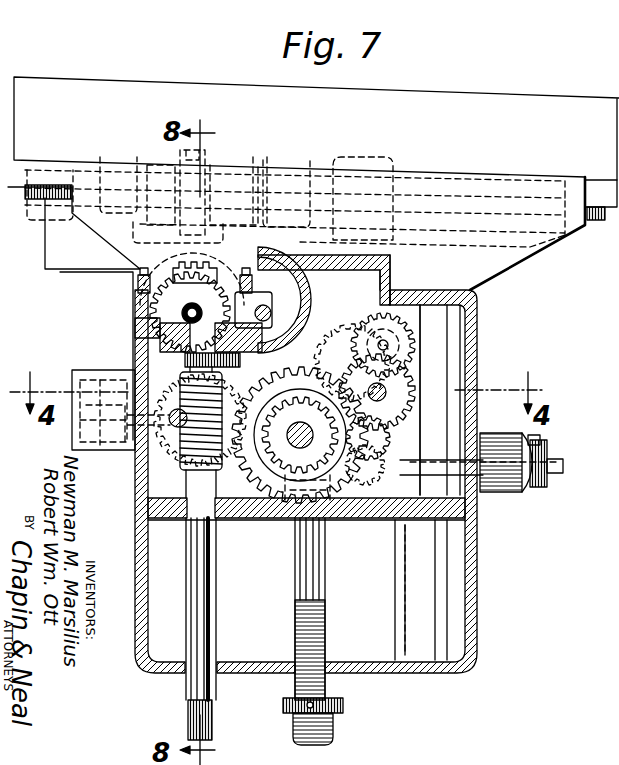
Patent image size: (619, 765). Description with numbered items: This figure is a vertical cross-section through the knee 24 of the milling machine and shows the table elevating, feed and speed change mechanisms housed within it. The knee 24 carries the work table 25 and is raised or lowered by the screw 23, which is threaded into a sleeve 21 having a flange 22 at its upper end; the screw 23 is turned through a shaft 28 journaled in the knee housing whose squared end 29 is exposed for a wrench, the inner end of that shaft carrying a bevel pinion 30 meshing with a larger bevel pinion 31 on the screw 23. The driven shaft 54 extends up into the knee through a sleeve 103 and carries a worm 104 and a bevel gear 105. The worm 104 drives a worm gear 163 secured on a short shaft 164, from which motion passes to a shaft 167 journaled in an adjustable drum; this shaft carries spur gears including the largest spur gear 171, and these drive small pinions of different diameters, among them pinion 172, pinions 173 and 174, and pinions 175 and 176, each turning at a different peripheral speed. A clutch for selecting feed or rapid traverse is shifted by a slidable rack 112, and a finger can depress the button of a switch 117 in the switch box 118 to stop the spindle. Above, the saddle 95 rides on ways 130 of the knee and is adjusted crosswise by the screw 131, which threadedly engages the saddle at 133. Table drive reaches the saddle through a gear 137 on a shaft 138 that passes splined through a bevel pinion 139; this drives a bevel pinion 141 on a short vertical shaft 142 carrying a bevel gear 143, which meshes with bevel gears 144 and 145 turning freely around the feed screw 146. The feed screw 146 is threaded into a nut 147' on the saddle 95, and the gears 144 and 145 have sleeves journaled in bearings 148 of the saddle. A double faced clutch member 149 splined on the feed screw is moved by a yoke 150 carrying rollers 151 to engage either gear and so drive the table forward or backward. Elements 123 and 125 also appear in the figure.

The work table 25 is at (470, 99).
The bearings 148 is at (100, 178).
The bevel gear 144 is at (147, 163).
The bevel gear 145 is at (260, 158).
The double faced clutch member 149 is at (214, 164).
The rollers 151 is at (210, 160).
The yoke 150 is at (188, 158).
The nut 147' is at (366, 180).
The feed screw 146 is at (30, 200).
The ways 130 is at (392, 270).
The saddle 95 is at (505, 270).
The knee 24 is at (362, 519).
The adjustable screw 131 is at (306, 294).
The threaded engagement 133 is at (299, 312).
The gear 137 is at (290, 300).
The shaft 138 is at (165, 337).
The bevel pinion 139 is at (182, 316).
The bevel gear 143 is at (173, 262).
The short vertical shaft 142 is at (138, 282).
The bevel pinion 141 is at (138, 303).
The worm 104 is at (182, 452).
The switch box 118 is at (103, 392).
The slidable rack 112 is at (170, 418).
The switch 117 is at (99, 432).
The short shaft 164 is at (290, 448).
The bevel gear 105 is at (308, 385).
The worm gear 163 is at (348, 352).
The pinion 172 is at (366, 332).
The pinion 173 is at (383, 342).
The pinion 174 is at (418, 383).
The spur gear 171 is at (422, 360).
The pinion 175 is at (426, 432).
The shaft 167 is at (376, 400).
The pinion 176 is at (372, 470).
The bevel pinion 30 is at (362, 494).
The shaft 28 is at (445, 458).
The squared end 29 is at (548, 475).
The sleeve 103 is at (188, 540).
The driven shaft 54 is at (188, 705).
The screw 23 is at (327, 587).
The flange 22 is at (344, 704).
The sleeve 21 is at (334, 731).
The bevel pinion 31 is at (306, 530).
The shaft 123 is at (605, 311).
The arm 125 is at (604, 394).